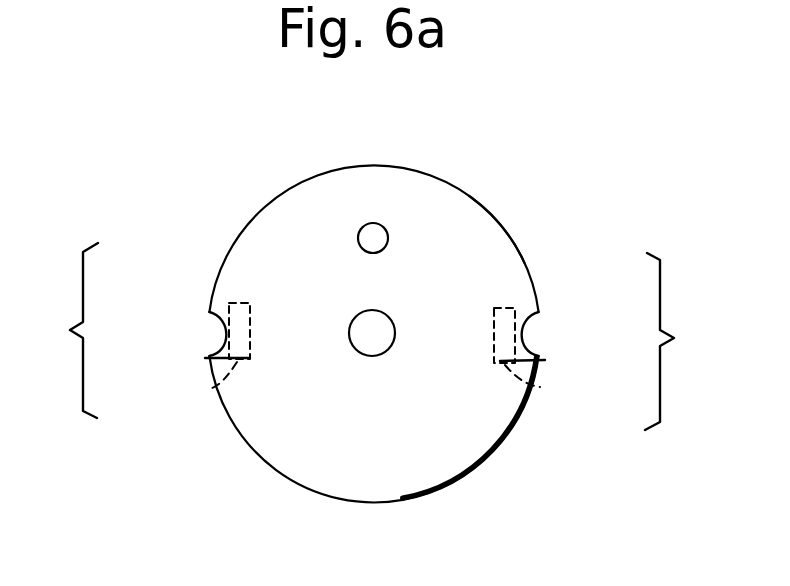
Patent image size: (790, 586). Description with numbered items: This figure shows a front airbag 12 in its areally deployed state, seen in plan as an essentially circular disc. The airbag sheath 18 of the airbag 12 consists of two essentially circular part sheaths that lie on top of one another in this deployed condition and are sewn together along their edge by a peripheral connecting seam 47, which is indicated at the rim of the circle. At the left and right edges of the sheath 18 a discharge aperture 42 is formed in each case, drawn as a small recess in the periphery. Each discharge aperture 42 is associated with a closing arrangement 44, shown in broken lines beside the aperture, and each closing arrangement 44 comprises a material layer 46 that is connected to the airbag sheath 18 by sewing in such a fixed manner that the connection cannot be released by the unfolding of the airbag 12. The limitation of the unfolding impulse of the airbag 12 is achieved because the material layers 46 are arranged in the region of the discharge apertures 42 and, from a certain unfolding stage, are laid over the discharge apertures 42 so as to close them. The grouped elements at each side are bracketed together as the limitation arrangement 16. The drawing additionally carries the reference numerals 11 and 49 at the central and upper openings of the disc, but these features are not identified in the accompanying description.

The central bore 11 is at (372, 345).
The airbag 12 is at (408, 475).
The locking arrangement 16 is at (372, 336).
The airbag sheath 18 is at (305, 181).
The discharge aperture 42 is at (212, 323).
The closing arrangement 44 is at (205, 358).
The material layer 46 is at (212, 388).
The peripheral connecting seam 47 is at (528, 264).
The hole 49 is at (386, 236).